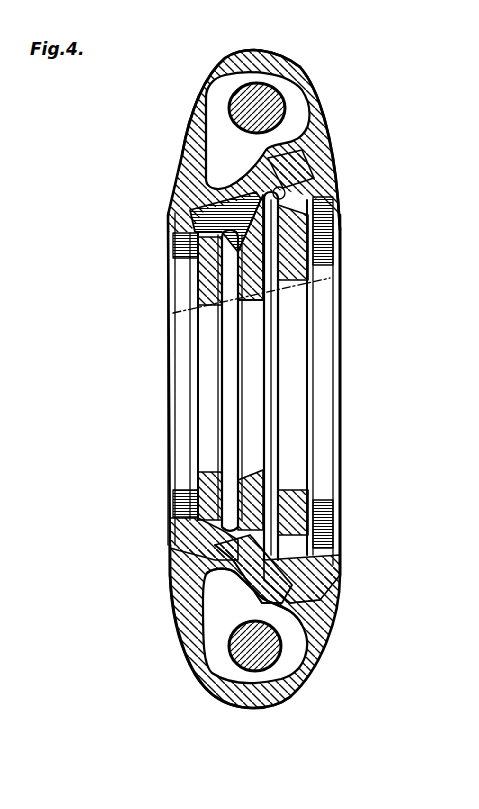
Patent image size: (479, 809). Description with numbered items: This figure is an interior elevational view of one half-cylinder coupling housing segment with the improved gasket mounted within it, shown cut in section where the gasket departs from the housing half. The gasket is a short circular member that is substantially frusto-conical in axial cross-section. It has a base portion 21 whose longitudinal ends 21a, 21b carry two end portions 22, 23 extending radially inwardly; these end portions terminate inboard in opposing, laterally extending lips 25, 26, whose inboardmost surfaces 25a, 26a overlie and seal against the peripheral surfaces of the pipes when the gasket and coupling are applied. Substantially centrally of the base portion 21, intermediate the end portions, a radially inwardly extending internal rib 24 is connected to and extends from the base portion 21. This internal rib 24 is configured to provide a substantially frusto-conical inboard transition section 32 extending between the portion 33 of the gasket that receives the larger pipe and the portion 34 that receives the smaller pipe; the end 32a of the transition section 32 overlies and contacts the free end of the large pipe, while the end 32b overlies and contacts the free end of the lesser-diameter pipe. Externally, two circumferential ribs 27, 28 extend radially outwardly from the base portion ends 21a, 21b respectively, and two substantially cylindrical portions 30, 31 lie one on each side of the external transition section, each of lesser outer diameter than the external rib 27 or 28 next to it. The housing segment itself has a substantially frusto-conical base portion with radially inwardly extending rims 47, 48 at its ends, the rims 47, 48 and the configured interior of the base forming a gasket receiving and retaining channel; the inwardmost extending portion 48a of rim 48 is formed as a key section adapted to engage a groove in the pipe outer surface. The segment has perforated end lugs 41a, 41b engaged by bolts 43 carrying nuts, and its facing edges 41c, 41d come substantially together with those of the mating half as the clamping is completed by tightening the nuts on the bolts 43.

The base portion 21 is at (260, 163).
The longitudinal end of base portion 21a is at (303, 168).
The longitudinal end of base portion 21b is at (190, 212).
The end portion 22 is at (303, 572).
The end portion 23 is at (212, 540).
The internal rib 24 is at (240, 503).
The lip 25 is at (290, 537).
The inboardmost surface of lip 25a is at (300, 376).
The lip 26 is at (207, 500).
The inboardmost surface of lip 26a is at (210, 284).
The external circumferential rib 27 is at (300, 598).
The external circumferential rib 28 is at (215, 552).
The cylindrical portion 30 is at (267, 597).
The cylindrical portion 31 is at (232, 555).
The inboard transition section 32 is at (250, 410).
The end of transition section 32a is at (322, 236).
The end of transition section 32b is at (233, 333).
The larger pipe receiving portion 33 is at (287, 192).
The smaller pipe receiving portion 34 is at (182, 175).
The end lug 41a is at (287, 63).
The end lug 41b is at (190, 647).
The facing edge 41c is at (313, 83).
The facing edge 41d is at (197, 677).
The bolt 43 is at (230, 110).
The end rim 47 is at (328, 348).
The end rim 48 is at (187, 228).
The inwardmost extending portion of rim 48a is at (177, 412).